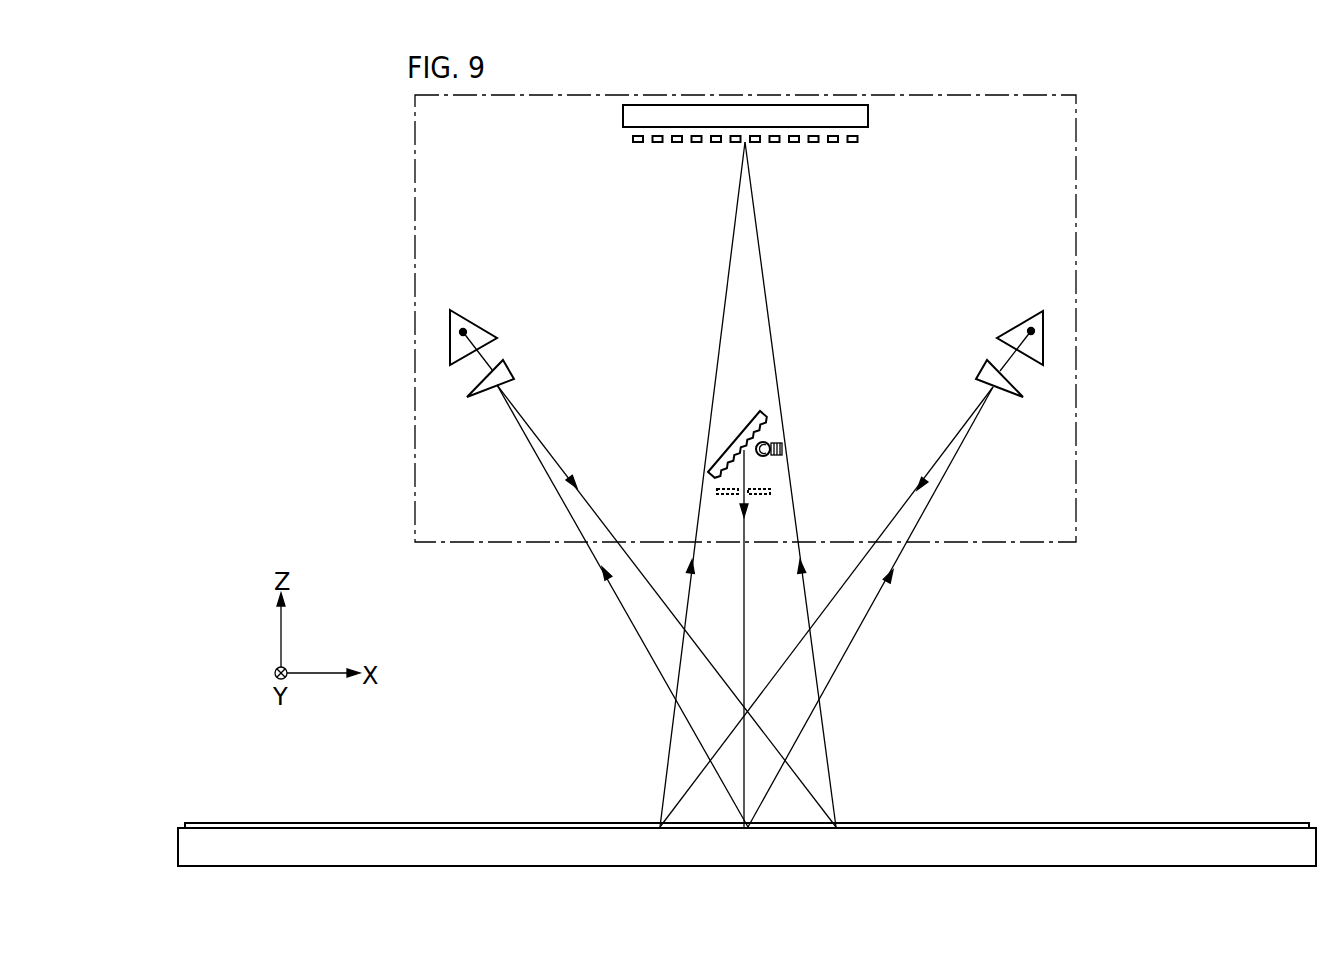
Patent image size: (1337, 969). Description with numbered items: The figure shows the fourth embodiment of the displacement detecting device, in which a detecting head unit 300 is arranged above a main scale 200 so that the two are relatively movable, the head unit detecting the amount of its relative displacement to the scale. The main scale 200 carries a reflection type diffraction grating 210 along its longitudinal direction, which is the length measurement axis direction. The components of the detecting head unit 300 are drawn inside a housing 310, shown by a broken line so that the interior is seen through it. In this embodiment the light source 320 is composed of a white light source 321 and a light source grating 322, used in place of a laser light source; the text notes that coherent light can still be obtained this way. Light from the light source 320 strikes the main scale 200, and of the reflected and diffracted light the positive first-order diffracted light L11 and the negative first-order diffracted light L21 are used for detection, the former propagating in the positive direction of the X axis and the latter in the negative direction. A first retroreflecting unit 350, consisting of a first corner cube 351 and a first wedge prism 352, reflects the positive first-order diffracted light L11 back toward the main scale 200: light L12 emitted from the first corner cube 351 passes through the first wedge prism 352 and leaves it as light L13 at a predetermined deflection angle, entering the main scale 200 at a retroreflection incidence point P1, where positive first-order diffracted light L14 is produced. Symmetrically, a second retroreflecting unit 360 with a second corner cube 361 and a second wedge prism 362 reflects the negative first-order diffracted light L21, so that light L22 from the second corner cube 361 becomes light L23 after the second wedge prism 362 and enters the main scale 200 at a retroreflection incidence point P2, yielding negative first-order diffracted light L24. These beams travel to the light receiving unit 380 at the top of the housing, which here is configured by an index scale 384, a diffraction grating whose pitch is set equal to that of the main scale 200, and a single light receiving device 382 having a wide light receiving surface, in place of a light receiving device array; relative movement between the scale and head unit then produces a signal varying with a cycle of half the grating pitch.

The detecting head unit 300 is at (1100, 181).
The housing 310 is at (1078, 125).
The light source 320 is at (745, 594).
The white light source 321 is at (778, 437).
The light source grating 322 is at (735, 440).
The first retroreflecting unit 350 is at (1059, 342).
The first corner cube 351 is at (1046, 330).
The first wedge prism 352 is at (1012, 397).
The second retroreflecting unit 360 is at (434, 342).
The second corner cube 361 is at (450, 328).
The second wedge prism 362 is at (483, 395).
The light receiving unit 380 is at (777, 162).
The light receiving device 382 is at (855, 113).
The index scale 384 is at (640, 143).
The main scale 200 is at (747, 804).
The reflection type diffraction grating 210 is at (1067, 822).
The positive first-order diffracted light L11 is at (858, 636).
The light emitted from the first corner cube L12 is at (1006, 360).
The light emitted from the first wedge prism L13 is at (893, 518).
The positive first-order diffracted light L14 is at (716, 365).
The negative first-order diffracted light L21 is at (640, 636).
The light emitted from the second corner cube L22 is at (487, 360).
The light emitted from the second wedge prism L23 is at (600, 507).
The negative first-order diffracted light L24 is at (776, 365).
The retroreflection incidence point P1 is at (660, 830).
The retroreflection incidence point P2 is at (836, 830).